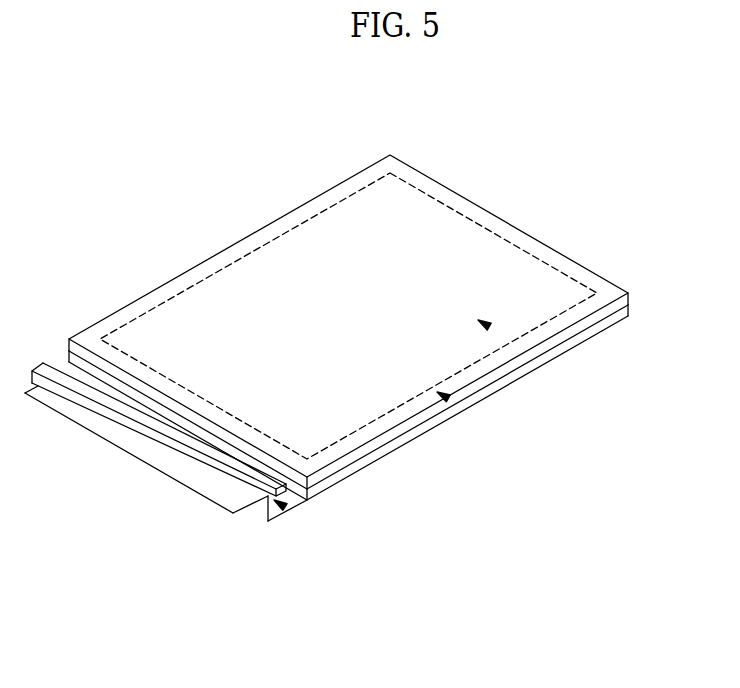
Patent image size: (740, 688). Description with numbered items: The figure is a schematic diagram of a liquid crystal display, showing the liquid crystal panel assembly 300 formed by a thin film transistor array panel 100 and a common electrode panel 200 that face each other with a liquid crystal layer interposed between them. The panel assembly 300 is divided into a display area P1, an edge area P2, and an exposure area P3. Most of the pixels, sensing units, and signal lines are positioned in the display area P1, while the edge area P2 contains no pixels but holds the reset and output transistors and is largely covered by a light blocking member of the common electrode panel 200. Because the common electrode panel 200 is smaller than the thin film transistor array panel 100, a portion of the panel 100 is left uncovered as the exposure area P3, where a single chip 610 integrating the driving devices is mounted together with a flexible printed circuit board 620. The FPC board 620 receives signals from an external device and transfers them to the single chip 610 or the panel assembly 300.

The thin film transistor array panel 100 is at (628, 310).
The common electrode panel 200 is at (628, 293).
The liquid crystal panel assembly 300 is at (386, 327).
The single chip 610 is at (60, 362).
The flexible printed circuit board 620 is at (107, 441).
The display area P1 is at (484, 324).
The edge area P2 is at (443, 396).
The exposure area P3 is at (280, 504).